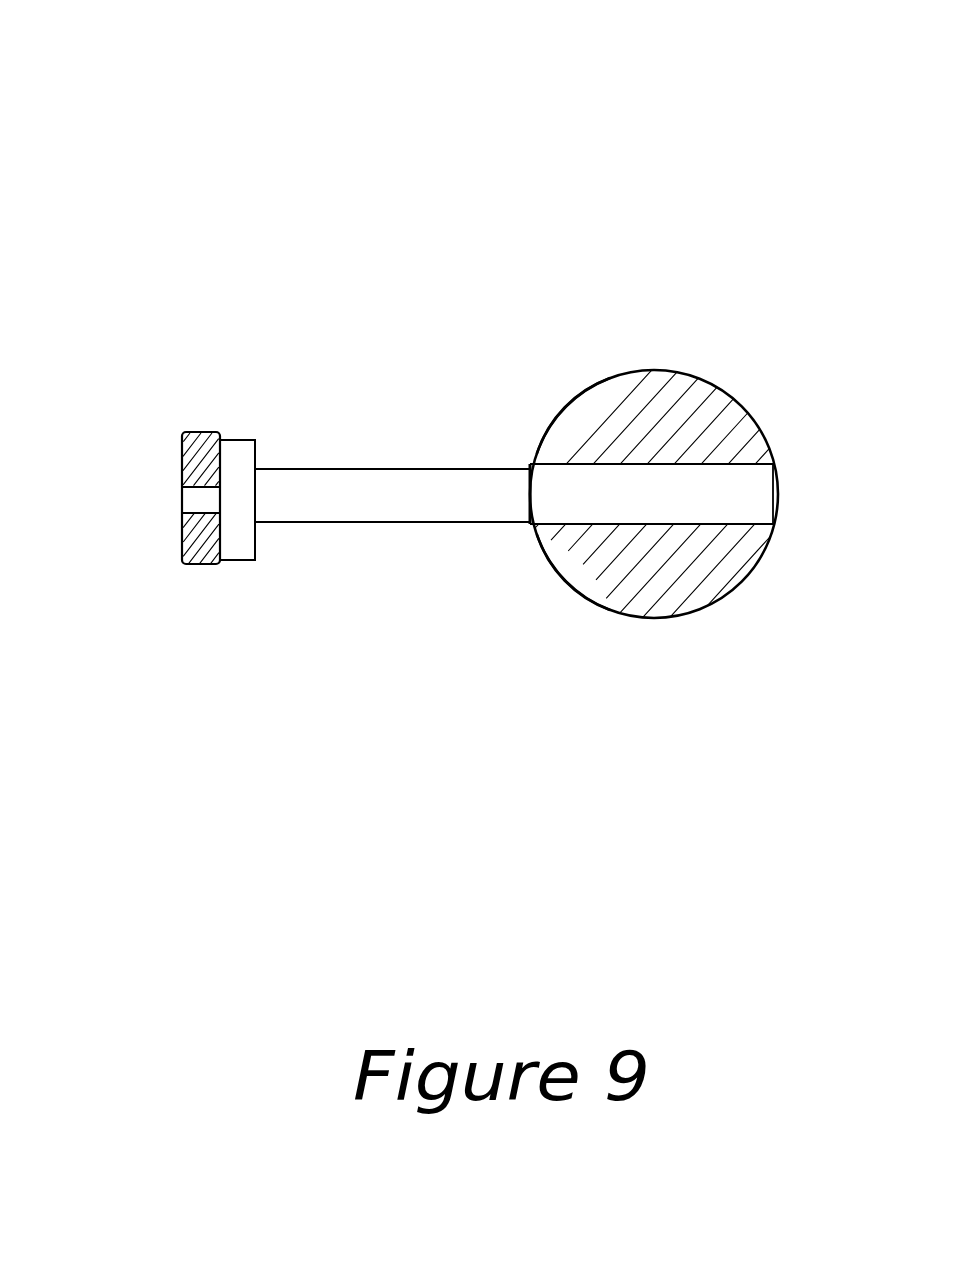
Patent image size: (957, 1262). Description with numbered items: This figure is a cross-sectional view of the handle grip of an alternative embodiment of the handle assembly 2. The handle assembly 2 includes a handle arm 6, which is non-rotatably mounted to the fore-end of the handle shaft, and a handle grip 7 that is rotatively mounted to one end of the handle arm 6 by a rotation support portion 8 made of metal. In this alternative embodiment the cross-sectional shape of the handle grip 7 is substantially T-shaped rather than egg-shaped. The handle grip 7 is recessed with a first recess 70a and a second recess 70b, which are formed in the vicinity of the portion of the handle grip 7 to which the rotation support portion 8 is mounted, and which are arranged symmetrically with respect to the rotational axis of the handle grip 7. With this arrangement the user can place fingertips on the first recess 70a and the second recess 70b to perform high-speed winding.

The handle assembly 2 is at (407, 188).
The handle arm 6 is at (182, 454).
The handle grip 7 is at (712, 405).
The rotation support portion 8 is at (206, 500).
The first recess 70a is at (573, 433).
The second recess 70b is at (557, 553).